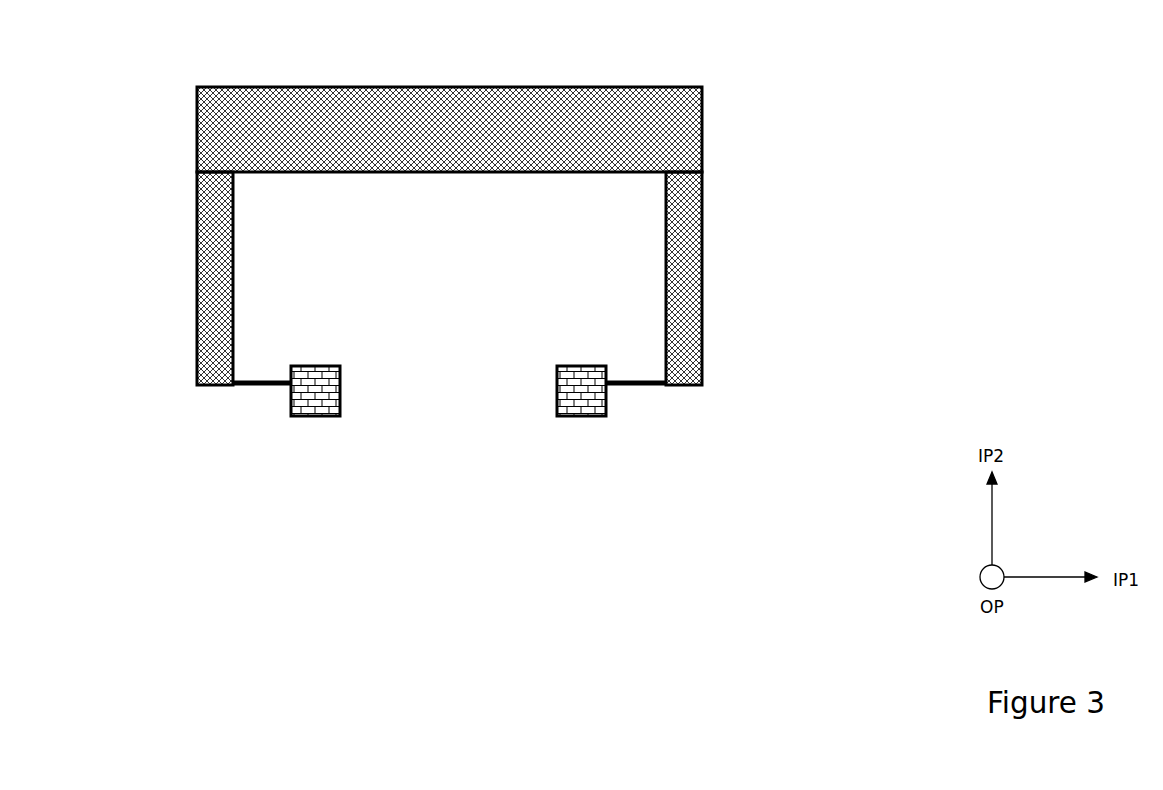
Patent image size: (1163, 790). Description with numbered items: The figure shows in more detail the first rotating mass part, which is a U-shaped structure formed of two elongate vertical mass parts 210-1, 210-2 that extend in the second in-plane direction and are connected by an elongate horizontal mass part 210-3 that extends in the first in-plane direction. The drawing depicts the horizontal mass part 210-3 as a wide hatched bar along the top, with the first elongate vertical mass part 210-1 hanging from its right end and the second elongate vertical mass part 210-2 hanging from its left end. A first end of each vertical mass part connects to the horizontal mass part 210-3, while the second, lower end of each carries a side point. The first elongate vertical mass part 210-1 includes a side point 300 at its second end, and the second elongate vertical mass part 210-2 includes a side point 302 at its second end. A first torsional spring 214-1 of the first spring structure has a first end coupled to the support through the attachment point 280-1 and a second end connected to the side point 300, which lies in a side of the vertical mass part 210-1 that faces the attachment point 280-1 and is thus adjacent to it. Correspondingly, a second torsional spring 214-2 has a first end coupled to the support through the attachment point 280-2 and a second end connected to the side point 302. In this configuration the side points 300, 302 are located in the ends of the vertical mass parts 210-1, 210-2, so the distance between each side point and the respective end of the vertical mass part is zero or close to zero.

The first elongate vertical mass part 210-1 is at (705, 230).
The second elongate vertical mass part 210-2 is at (197, 260).
The elongate horizontal mass part 210-3 is at (410, 113).
The first torsional spring 214-1 is at (637, 380).
The second torsional spring 214-2 is at (260, 378).
The attachment point 280-1 is at (567, 418).
The attachment point 280-2 is at (341, 376).
The side point 300 is at (672, 385).
The side point 302 is at (240, 390).